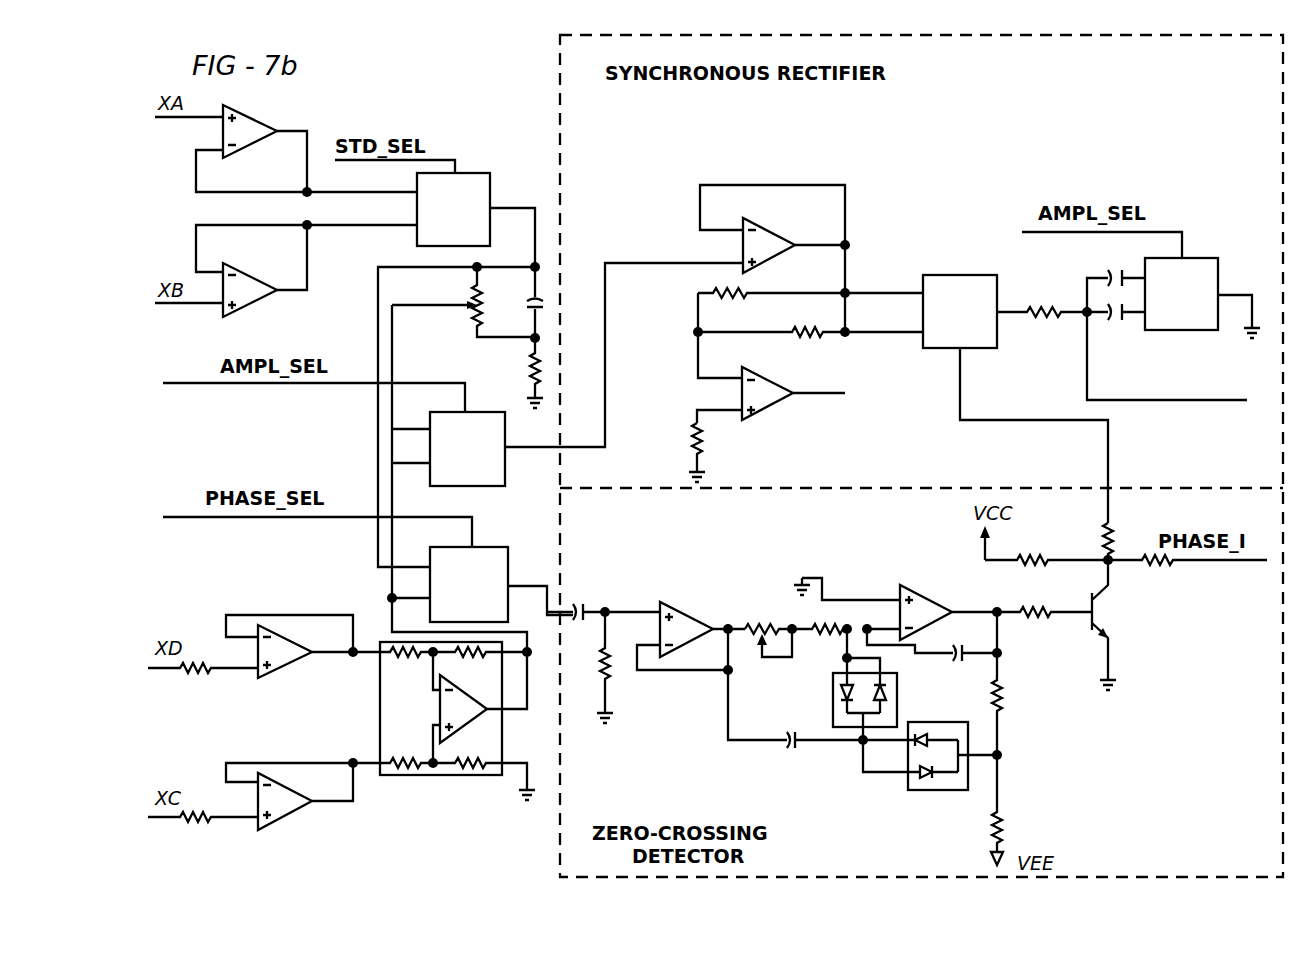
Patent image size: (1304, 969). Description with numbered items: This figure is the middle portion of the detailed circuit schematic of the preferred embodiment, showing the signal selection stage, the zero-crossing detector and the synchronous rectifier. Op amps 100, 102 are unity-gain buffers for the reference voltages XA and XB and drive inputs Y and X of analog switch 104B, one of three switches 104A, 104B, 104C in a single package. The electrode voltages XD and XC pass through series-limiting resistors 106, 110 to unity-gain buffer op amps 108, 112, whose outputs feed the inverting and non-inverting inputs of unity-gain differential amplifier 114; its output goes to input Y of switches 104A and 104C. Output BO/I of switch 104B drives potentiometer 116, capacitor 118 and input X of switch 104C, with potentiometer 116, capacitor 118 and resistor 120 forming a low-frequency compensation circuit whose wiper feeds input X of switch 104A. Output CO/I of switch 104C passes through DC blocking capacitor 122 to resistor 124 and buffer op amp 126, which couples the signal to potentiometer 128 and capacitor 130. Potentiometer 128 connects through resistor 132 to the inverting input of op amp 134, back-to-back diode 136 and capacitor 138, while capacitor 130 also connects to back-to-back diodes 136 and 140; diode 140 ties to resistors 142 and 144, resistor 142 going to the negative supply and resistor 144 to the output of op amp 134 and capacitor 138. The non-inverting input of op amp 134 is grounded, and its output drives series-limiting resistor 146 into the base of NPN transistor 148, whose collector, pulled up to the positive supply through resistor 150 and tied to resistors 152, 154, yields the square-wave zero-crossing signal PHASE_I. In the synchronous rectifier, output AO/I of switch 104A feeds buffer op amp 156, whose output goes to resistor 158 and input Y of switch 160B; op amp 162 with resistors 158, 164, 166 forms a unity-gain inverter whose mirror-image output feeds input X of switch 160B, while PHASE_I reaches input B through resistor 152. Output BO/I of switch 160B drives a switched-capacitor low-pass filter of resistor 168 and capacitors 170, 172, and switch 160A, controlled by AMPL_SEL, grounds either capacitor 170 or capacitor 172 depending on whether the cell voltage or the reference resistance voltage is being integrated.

The op amp 100 is at (268, 116).
The op amp 102 is at (256, 273).
The analog switch 104A is at (430, 447).
The analog switch 104B is at (417, 238).
The analog switch 104C is at (490, 545).
The series-limiting resistor 106 is at (192, 668).
The op amp 108 is at (297, 668).
The series-limiting resistor 110 is at (200, 818).
The op amp 112 is at (295, 818).
The unity-gain differential amplifier 114 is at (438, 776).
The potentiometer 116 is at (472, 318).
The capacitor 118 is at (525, 305).
The resistor 120 is at (528, 366).
The capacitor 122 is at (580, 599).
The resistor 124 is at (606, 664).
The op amp 126 is at (676, 598).
The potentiometer 128 is at (762, 620).
The capacitor 130 is at (792, 746).
The resistor 132 is at (814, 646).
The op amp 134 is at (904, 586).
The back-to-back diode 136 is at (834, 722).
The capacitor 138 is at (956, 660).
The back-to-back diode 140 is at (934, 807).
The resistor 142 is at (1002, 814).
The resistor 144 is at (1005, 692).
The series-limiting resistor 146 is at (1043, 619).
The transistor 148 is at (1108, 613).
The resistor 150 is at (1022, 555).
The series-limiting resistor 152 is at (1118, 536).
The resistor 154 is at (1161, 565).
The op amp 156 is at (778, 231).
The resistor 158 is at (711, 293).
The analog switch 160A is at (1196, 332).
The analog switch 160B is at (923, 350).
The op amp 162 is at (772, 374).
The resistor 164 is at (789, 325).
The resistor 166 is at (691, 436).
The resistor 168 is at (1045, 301).
The capacitor 170 is at (1116, 324).
The capacitor 172 is at (1110, 267).